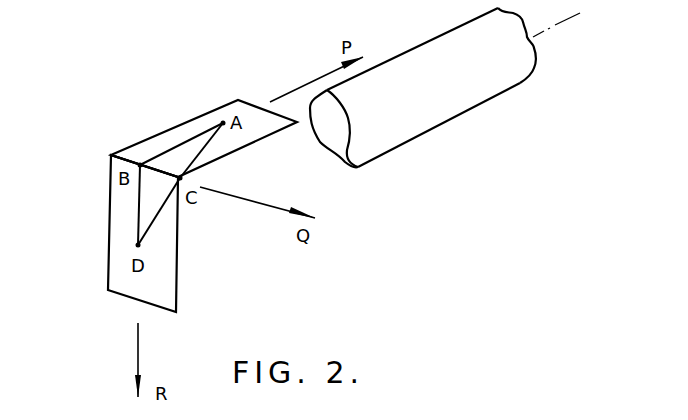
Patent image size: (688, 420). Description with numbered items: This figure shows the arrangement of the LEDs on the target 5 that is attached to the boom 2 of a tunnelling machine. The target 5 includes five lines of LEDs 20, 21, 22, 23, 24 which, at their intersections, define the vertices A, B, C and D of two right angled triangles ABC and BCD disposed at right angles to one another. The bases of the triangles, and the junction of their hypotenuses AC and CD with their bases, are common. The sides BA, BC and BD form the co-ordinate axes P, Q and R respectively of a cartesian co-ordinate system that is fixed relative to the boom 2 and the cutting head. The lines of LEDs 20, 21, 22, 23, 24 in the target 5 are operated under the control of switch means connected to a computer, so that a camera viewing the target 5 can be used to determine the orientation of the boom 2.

The boom 2 is at (447, 113).
The target 5 is at (83, 152).
The line of LEDs 20 is at (180, 145).
The line of LEDs 21 is at (203, 152).
The line of LEDs 22 is at (162, 172).
The line of LEDs 23 is at (140, 202).
The line of LEDs 24 is at (160, 212).